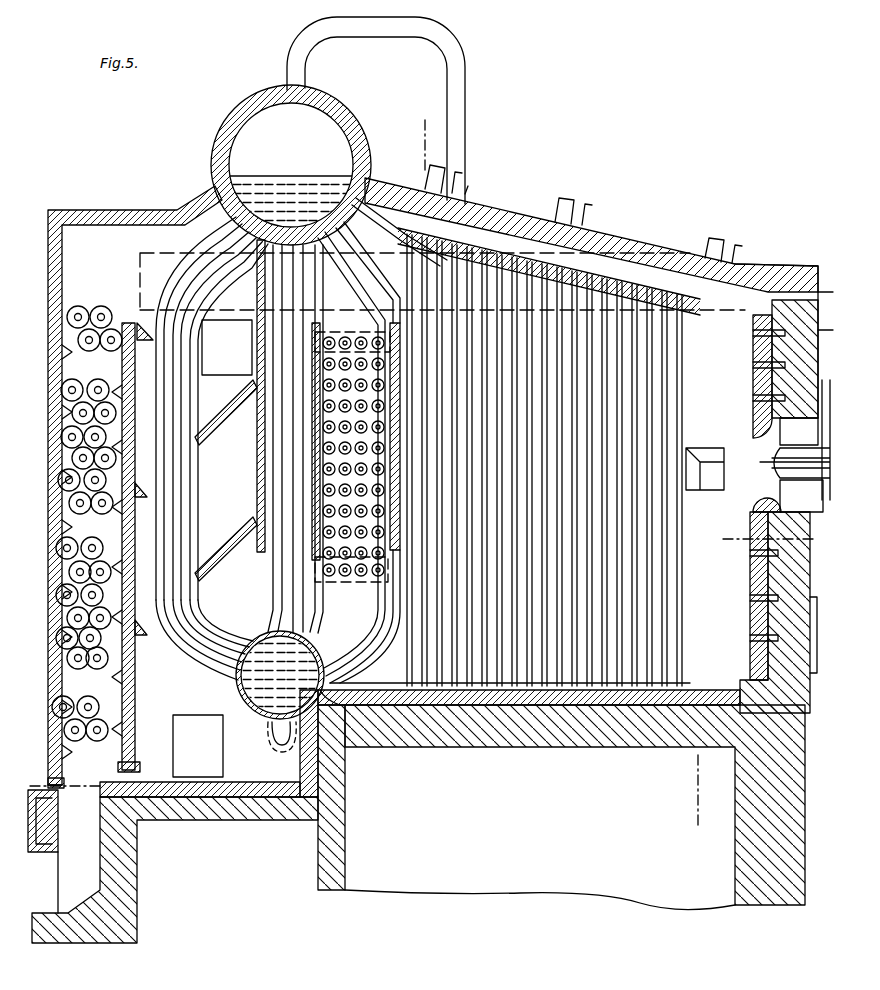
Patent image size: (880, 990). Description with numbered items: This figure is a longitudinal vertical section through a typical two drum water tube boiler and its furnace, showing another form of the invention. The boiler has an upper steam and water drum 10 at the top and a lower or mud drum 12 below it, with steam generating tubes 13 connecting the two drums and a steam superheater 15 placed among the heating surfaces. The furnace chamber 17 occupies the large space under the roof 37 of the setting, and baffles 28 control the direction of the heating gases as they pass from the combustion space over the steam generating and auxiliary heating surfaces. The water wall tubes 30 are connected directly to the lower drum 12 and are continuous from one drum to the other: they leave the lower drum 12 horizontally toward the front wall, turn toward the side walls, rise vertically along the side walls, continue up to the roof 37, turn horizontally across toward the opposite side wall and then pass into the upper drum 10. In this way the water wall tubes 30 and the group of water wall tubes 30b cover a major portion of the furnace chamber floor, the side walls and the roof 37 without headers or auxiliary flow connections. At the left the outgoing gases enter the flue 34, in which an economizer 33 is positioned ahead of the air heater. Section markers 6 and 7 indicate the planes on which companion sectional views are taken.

The upper steam and water drum 10 is at (270, 120).
The lower or mud drum 12 is at (254, 724).
The steam generating tubes 13 is at (168, 250).
The steam superheater 15 is at (346, 336).
The furnace chamber 17 is at (442, 460).
The baffles 28 is at (257, 306).
The water wall tubes 30 is at (382, 686).
The water wall tubes 30b is at (583, 262).
The economizer 33 is at (102, 308).
The flue 34 is at (95, 238).
The roof 37 is at (522, 228).
The section line 6- 6 is at (450, 143).
The section line 7- 7 is at (822, 540).